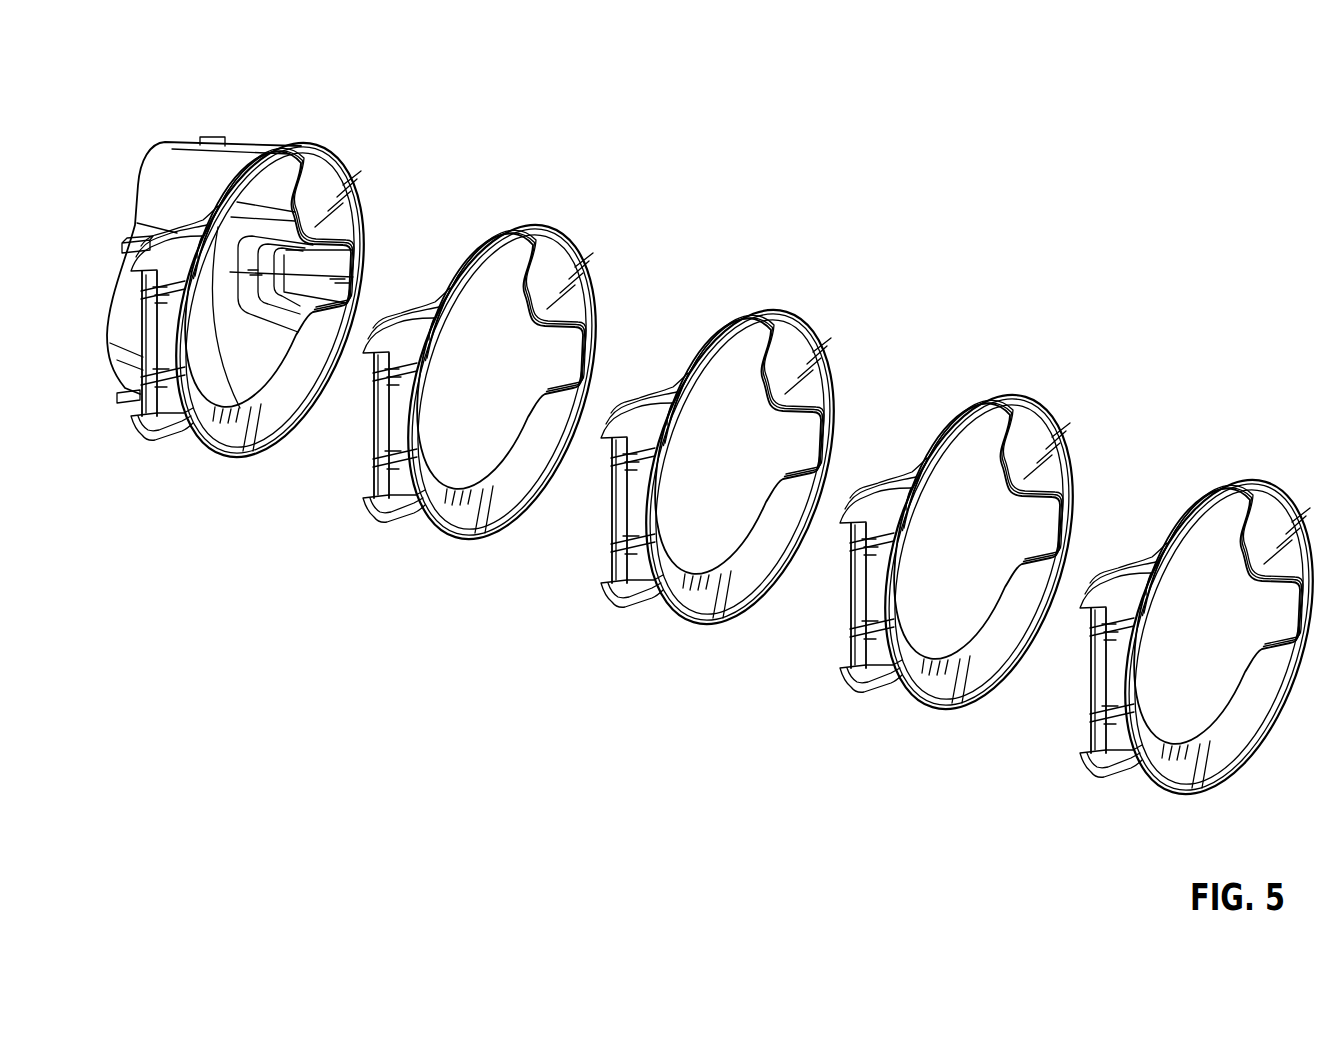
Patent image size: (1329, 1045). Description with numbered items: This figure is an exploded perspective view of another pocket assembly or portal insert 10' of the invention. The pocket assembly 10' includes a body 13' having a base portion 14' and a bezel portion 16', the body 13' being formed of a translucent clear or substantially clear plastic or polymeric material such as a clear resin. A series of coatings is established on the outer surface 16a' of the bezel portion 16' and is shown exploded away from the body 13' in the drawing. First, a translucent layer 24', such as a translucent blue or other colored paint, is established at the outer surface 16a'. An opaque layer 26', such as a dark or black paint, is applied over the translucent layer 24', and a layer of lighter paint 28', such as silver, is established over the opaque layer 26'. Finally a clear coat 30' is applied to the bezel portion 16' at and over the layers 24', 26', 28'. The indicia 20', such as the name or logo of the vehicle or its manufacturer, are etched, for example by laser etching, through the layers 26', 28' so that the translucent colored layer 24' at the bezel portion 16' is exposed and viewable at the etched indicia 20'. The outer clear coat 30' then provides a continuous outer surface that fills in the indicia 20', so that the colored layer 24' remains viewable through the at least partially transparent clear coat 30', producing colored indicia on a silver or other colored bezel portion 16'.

The pocket assembly 10' is at (718, 438).
The body 13' is at (282, 269).
The base portion 14' is at (204, 226).
The bezel portion 16' is at (228, 355).
The outer surface 16a' is at (207, 410).
The indicia 20' is at (856, 663).
The translucent layer 24' is at (516, 351).
The opaque layer 26' is at (772, 445).
The lighter paint layer 28' is at (979, 518).
The clear coat 30' is at (1204, 590).